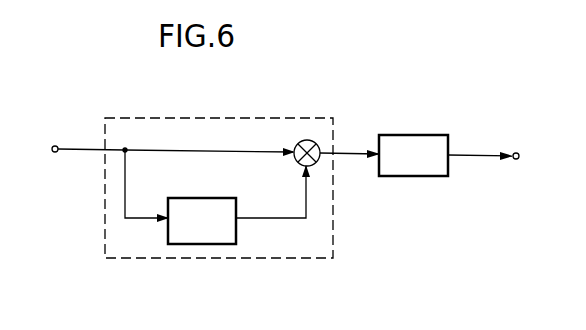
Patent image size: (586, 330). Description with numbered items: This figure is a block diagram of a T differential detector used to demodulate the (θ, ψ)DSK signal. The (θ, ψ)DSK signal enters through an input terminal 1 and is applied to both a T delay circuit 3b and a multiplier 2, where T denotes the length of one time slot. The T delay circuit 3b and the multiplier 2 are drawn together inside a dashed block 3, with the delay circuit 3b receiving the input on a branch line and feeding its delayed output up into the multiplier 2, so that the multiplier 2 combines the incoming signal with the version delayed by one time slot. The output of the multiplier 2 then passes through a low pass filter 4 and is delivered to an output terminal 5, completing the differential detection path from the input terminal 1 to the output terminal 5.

The input terminal 1 is at (55, 152).
The multiplier 2 is at (308, 140).
The correlator circuit 3 is at (190, 112).
The T delay circuit 3b is at (199, 247).
The low pass filter 4 is at (429, 135).
The output terminal 5 is at (518, 152).